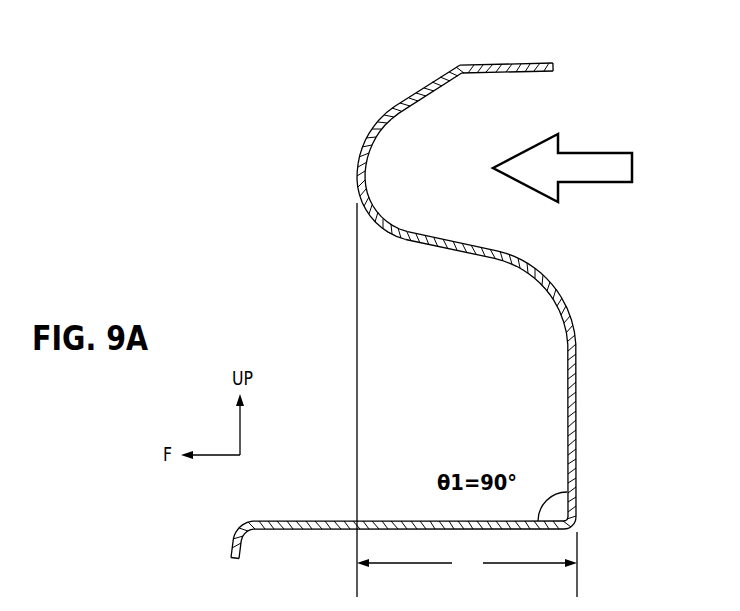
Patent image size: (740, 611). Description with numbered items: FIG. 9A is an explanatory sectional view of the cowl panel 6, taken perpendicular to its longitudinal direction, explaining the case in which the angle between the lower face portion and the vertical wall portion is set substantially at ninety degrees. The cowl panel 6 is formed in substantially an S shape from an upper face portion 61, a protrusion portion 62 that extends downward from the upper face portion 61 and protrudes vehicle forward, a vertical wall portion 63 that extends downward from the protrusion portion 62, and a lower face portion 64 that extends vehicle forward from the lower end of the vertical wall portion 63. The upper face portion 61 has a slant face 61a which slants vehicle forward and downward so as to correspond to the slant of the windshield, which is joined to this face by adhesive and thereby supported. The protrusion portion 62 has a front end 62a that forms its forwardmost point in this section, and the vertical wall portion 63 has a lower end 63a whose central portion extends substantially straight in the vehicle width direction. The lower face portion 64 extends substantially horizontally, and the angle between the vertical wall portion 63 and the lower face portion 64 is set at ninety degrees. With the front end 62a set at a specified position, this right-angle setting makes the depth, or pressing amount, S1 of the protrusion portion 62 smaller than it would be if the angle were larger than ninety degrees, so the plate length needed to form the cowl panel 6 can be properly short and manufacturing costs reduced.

The cowl panel 6 is at (313, 297).
The upper face portion 61 is at (511, 58).
The slant face 61a is at (418, 92).
The protrusion portion 62 is at (357, 145).
The front end 62a is at (356, 176).
The vertical wall portion 63 is at (565, 410).
The lower end 63a is at (576, 524).
The lower face portion 64 is at (303, 520).
The depth (pressing amount) of the protrusion portion S1 is at (467, 400).